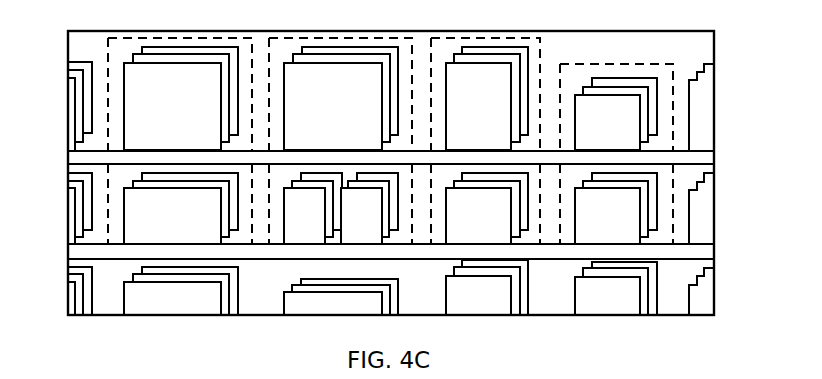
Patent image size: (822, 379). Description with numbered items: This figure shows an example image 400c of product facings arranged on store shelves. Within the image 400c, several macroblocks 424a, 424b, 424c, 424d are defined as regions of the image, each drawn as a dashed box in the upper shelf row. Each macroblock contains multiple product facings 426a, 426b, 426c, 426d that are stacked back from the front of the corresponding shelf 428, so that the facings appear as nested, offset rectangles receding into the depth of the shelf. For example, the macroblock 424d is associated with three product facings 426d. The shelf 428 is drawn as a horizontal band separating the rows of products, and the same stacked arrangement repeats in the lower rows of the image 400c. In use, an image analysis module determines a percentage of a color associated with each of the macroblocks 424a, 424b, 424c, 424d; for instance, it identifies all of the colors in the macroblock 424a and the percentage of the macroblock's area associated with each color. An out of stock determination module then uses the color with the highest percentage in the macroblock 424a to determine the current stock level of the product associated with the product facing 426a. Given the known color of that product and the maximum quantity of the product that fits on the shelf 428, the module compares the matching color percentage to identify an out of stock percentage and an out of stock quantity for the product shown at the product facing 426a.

The image 400c is at (68, 62).
The macroblock 424a is at (185, 38).
The macroblock 424b is at (345, 38).
The macroblock 424c is at (490, 38).
The macroblock 424d is at (616, 64).
The product facing 426a is at (210, 142).
The product facing 426b is at (370, 142).
The product facing 426c is at (500, 142).
The product facing 426d is at (628, 142).
The shelf 428 is at (714, 157).